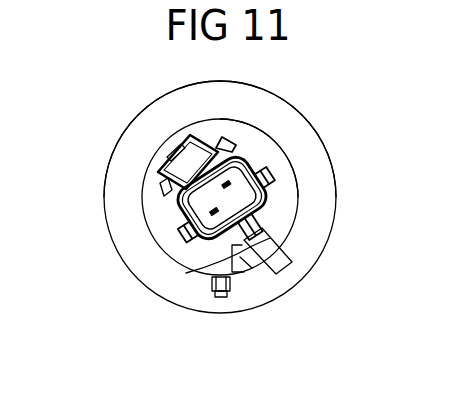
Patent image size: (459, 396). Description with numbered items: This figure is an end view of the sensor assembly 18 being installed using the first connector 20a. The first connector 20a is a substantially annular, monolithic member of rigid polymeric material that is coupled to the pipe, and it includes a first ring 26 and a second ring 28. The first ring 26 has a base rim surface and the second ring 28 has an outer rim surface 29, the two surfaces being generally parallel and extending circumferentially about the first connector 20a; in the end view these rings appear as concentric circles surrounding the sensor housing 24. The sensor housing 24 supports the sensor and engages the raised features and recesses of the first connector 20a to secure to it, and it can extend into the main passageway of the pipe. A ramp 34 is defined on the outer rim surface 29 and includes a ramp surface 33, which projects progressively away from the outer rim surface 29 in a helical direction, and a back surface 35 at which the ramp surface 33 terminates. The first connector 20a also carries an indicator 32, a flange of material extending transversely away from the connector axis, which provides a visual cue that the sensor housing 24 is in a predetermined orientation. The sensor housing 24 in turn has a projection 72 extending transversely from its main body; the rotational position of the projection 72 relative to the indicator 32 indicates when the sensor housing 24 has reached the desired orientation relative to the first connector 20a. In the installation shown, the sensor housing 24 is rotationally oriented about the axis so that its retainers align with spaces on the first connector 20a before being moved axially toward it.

The sensor assembly 18 is at (88, 74).
The first connector 20a is at (318, 110).
The sensor housing 24 is at (274, 187).
The first ring 26 is at (124, 154).
The second ring 28 is at (288, 214).
The outer rim surface 29 is at (158, 222).
The indicator 32 is at (222, 300).
The ramp surface 33 is at (266, 274).
The ramp 34 is at (252, 280).
The back surface 35 is at (200, 267).
The projection 72 is at (290, 262).